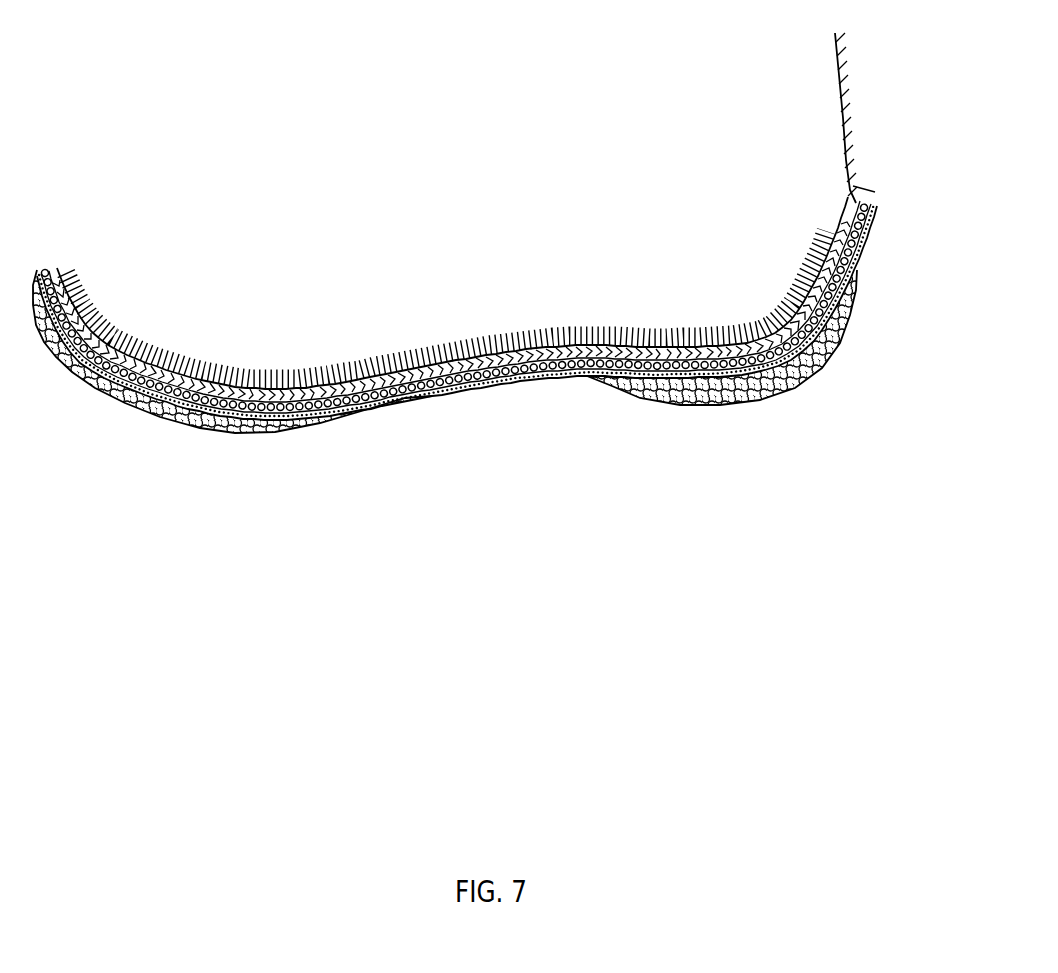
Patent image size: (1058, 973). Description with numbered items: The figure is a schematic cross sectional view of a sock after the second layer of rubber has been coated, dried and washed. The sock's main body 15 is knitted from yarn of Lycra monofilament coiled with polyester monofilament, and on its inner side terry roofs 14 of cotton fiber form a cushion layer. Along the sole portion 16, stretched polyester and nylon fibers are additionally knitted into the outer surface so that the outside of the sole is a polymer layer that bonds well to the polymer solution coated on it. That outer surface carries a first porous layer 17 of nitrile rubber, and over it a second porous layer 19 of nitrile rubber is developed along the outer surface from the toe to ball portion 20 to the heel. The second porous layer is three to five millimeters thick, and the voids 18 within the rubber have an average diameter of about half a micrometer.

The terry roof 14 is at (437, 352).
The main body 15 is at (458, 390).
The sole portion 16 is at (500, 390).
The first porous layer 17 is at (565, 378).
The voids 18 is at (735, 404).
The second porous layer 19 is at (152, 416).
The toe to ball portion 20 is at (143, 245).